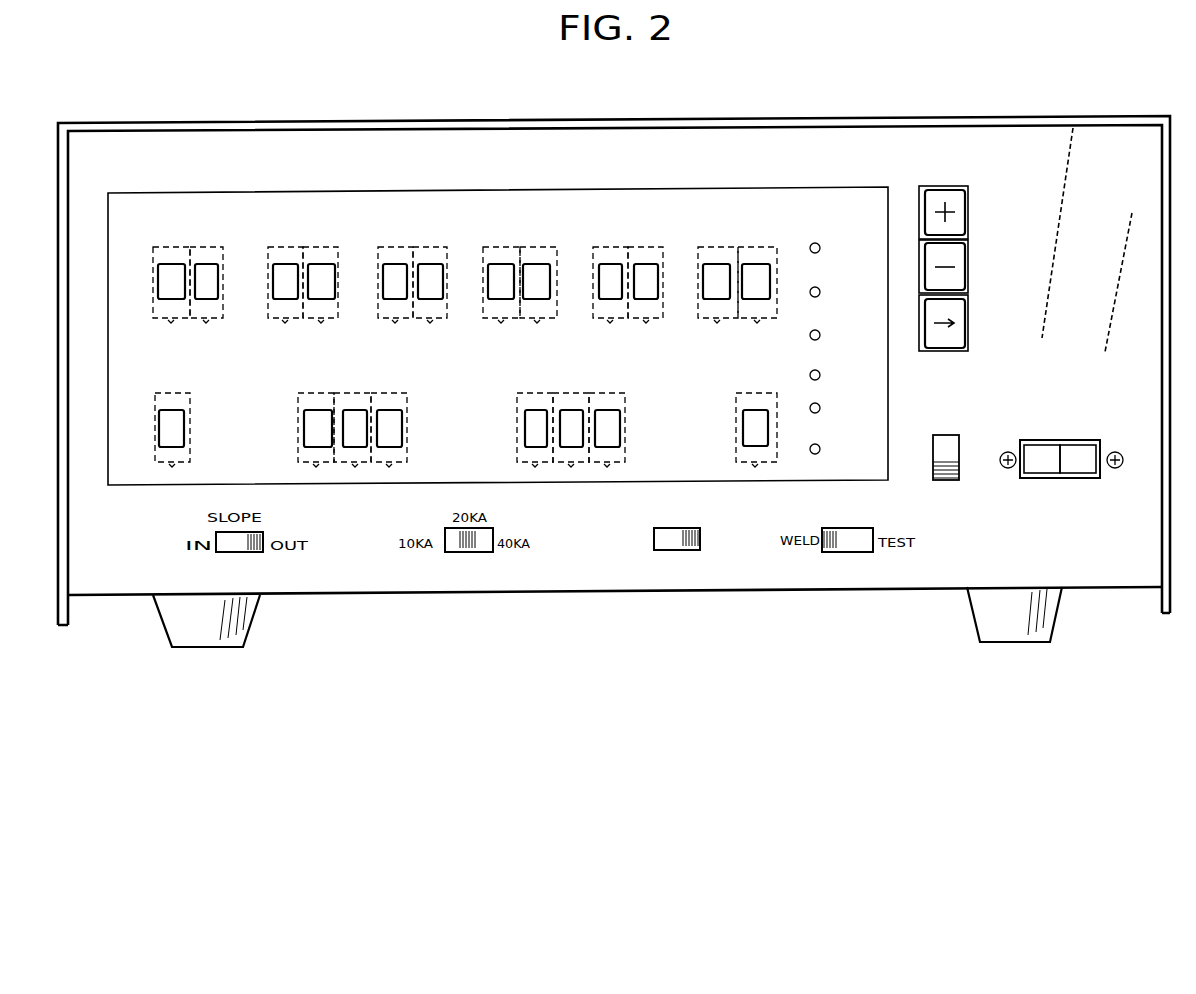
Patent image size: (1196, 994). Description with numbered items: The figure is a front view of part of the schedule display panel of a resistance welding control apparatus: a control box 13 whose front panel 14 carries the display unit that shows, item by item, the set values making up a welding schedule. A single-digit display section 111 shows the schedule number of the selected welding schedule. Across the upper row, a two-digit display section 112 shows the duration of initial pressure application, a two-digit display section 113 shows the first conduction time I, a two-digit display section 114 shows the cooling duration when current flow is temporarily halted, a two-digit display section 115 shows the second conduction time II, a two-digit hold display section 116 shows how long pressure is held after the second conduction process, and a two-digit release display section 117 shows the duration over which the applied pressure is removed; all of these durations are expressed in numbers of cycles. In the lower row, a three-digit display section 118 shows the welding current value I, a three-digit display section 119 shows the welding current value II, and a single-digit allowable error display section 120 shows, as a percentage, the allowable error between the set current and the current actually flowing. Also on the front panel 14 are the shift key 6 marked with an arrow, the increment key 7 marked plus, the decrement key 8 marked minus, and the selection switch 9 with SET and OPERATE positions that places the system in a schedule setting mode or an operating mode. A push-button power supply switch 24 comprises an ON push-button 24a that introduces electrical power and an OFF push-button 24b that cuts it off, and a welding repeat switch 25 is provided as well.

The control box 13 is at (806, 117).
The front panel 14 is at (893, 153).
The two-digit display section 112 is at (158, 287).
The two-digit display section 113 is at (328, 282).
The two-digit display section 114 is at (437, 290).
The two-digit display section 115 is at (547, 280).
The two-digit hold display section 116 is at (652, 273).
The two-digit release display section 117 is at (765, 277).
The single-digit display section 111 is at (157, 444).
The three-digit display section 118 is at (353, 450).
The three-digit display section 119 is at (570, 443).
The single-digit allowable error display section 120 is at (762, 443).
The welding repeat switch 25 is at (692, 547).
The increment key 7 is at (963, 199).
The decrement key 8 is at (960, 257).
The shift key 6 is at (958, 311).
The selection switch 9 is at (953, 448).
The power supply switch 24 is at (1069, 451).
The ON push-button 24a is at (1043, 468).
The OFF push-button 24b is at (1085, 468).